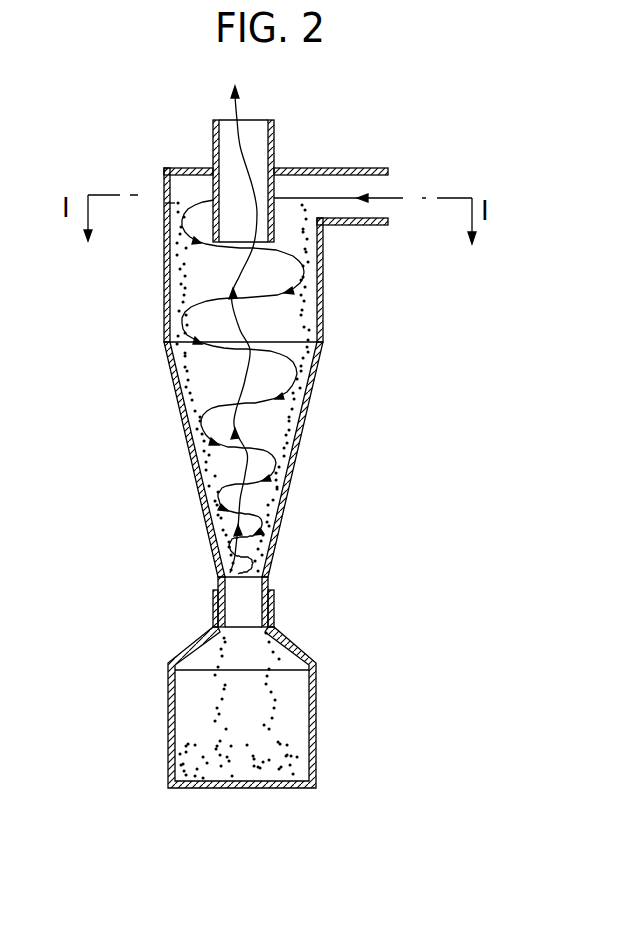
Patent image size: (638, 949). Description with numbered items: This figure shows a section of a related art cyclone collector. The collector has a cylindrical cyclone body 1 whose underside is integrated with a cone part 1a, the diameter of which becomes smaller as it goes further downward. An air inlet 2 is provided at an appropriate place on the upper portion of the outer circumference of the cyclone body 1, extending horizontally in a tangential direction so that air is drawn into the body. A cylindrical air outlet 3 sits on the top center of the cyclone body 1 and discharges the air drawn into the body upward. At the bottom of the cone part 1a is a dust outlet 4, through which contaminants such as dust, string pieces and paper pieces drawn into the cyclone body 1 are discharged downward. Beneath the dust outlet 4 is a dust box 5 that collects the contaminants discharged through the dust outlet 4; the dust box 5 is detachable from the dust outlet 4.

The cyclone body 1 is at (239, 372).
The cone part 1a is at (293, 470).
The air inlet 2 is at (355, 226).
The air outlet 3 is at (275, 143).
The dust outlet 4 is at (268, 580).
The dust box 5 is at (316, 727).